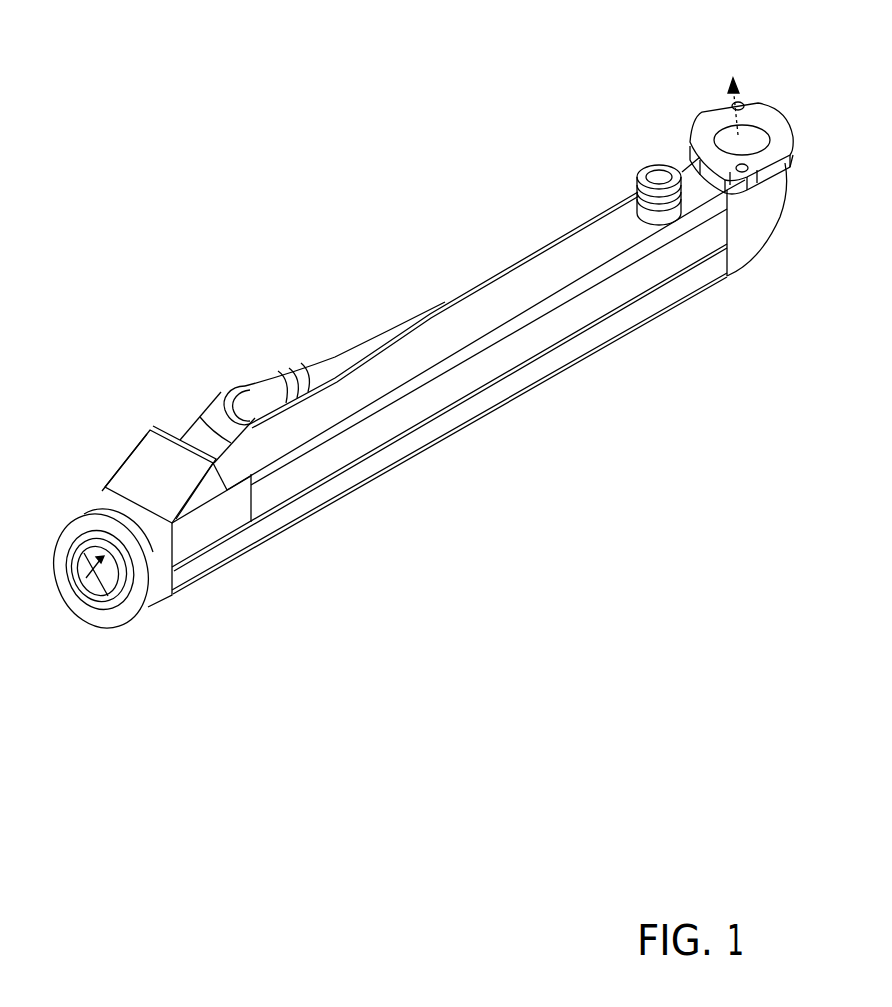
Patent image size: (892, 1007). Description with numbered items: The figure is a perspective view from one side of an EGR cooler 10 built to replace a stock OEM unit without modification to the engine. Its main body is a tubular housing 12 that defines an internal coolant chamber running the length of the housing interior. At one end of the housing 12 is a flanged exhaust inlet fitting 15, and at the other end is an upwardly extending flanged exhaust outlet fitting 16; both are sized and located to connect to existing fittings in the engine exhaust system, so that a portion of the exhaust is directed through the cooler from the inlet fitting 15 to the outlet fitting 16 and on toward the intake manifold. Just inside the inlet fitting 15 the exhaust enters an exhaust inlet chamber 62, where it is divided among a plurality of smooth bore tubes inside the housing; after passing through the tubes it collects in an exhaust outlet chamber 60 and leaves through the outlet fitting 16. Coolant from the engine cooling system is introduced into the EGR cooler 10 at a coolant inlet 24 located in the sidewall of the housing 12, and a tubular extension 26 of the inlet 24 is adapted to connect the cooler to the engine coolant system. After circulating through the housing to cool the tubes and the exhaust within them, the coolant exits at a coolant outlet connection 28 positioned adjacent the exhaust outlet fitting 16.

The EGR cooler 10 is at (416, 399).
The housing 12 is at (522, 275).
The exhaust inlet fitting 15 is at (133, 562).
The exhaust outlet fitting 16 is at (699, 116).
The coolant inlet 24 is at (323, 352).
The tubular extension 26 is at (416, 313).
The coolant outlet connection 28 is at (645, 171).
The exhaust outlet chamber 60 is at (714, 141).
The exhaust inlet chamber 62 is at (62, 522).